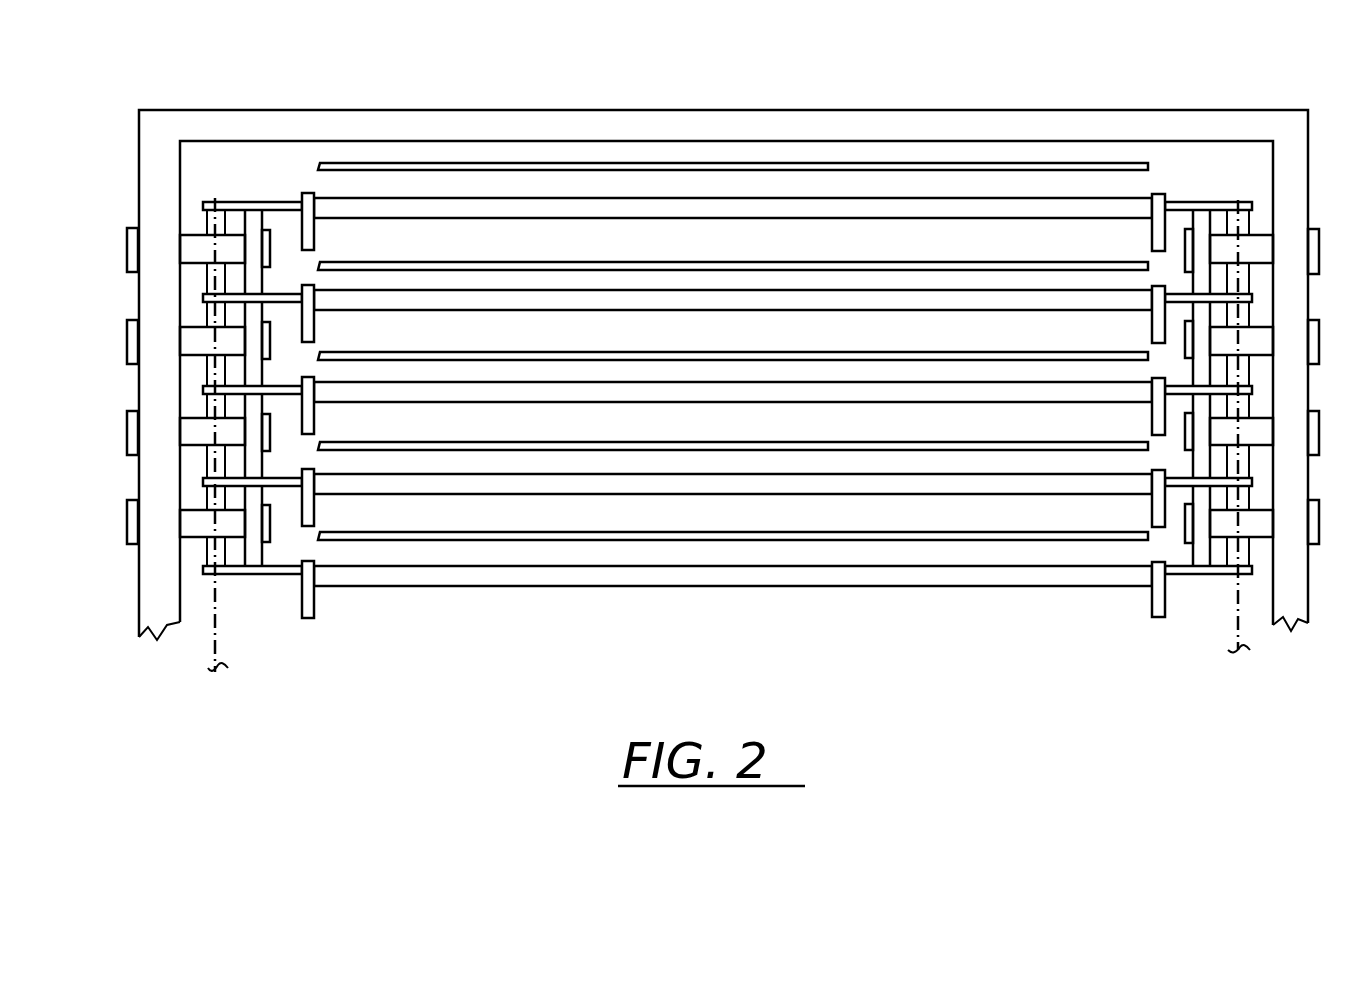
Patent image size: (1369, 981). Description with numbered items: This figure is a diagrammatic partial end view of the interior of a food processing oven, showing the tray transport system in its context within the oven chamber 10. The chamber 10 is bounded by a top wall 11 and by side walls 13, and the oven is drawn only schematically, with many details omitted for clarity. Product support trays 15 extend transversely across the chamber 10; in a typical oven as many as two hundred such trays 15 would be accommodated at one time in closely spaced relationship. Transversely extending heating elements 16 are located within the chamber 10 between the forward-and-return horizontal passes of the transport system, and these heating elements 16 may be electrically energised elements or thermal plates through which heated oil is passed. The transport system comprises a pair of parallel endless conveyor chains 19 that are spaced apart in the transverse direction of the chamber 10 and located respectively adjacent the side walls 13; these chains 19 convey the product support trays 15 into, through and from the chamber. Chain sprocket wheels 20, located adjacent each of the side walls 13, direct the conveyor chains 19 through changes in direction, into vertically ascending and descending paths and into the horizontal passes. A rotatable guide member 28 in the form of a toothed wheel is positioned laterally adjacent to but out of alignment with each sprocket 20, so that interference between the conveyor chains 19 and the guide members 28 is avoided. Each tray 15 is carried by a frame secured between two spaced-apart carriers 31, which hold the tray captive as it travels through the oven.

The oven chamber 10 is at (725, 362).
The top wall 11 is at (683, 120).
The side walls 13 is at (133, 215).
The product support trays 15 is at (780, 208).
The heating elements 16 is at (920, 160).
The endless conveyor chains 19 is at (217, 643).
The chain sprocket wheels 20 is at (1247, 493).
The rotatable guide member 28 is at (257, 222).
The carriers 31 is at (312, 233).